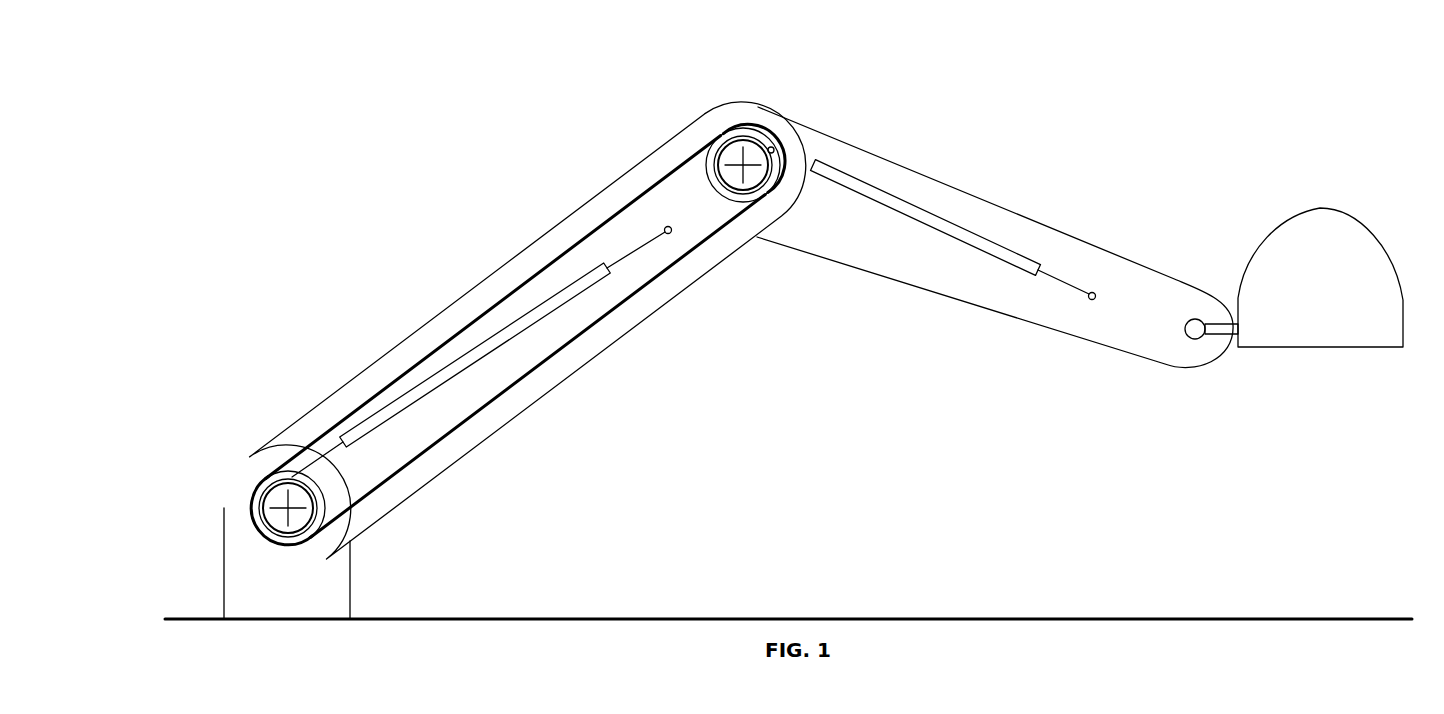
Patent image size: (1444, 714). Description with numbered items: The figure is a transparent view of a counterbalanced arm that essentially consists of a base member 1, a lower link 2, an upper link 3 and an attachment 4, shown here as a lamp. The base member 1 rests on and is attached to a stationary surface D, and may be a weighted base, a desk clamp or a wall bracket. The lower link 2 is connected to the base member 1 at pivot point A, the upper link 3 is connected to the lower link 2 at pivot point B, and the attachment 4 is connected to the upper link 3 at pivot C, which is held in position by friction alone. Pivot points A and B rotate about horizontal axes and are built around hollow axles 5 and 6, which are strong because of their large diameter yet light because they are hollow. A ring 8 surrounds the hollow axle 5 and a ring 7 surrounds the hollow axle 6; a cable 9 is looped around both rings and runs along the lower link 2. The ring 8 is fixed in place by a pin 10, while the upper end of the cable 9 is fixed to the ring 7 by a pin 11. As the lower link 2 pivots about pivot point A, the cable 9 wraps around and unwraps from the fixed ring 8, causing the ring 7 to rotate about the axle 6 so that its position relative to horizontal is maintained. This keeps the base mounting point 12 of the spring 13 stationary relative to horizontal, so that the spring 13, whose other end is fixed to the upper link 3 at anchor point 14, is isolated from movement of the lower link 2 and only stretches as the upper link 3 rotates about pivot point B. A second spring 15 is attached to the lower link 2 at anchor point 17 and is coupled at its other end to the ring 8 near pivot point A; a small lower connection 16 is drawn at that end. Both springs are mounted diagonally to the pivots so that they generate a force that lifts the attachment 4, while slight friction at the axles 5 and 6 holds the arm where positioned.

The base member 1 is at (230, 573).
The lower link 2 is at (618, 196).
The upper link 3 is at (917, 178).
The attachment 4 is at (1277, 227).
The hollow axle 5 is at (263, 525).
The hollow axle 6 is at (698, 148).
The ring 7 is at (739, 130).
The ring 8 is at (257, 508).
The cable 9 is at (653, 176).
The pin 10 is at (293, 552).
The pin 11 is at (778, 154).
The base mounting point 12 is at (768, 140).
The spring 13 is at (838, 168).
The anchor point 14 is at (1097, 286).
The spring 15 is at (597, 280).
The first actuator rod end 16 is at (283, 472).
The anchor point 17 is at (688, 248).
The pivot point A is at (262, 487).
The pivot point B is at (718, 133).
The pivot C is at (1197, 320).
The stationary surface D is at (200, 618).